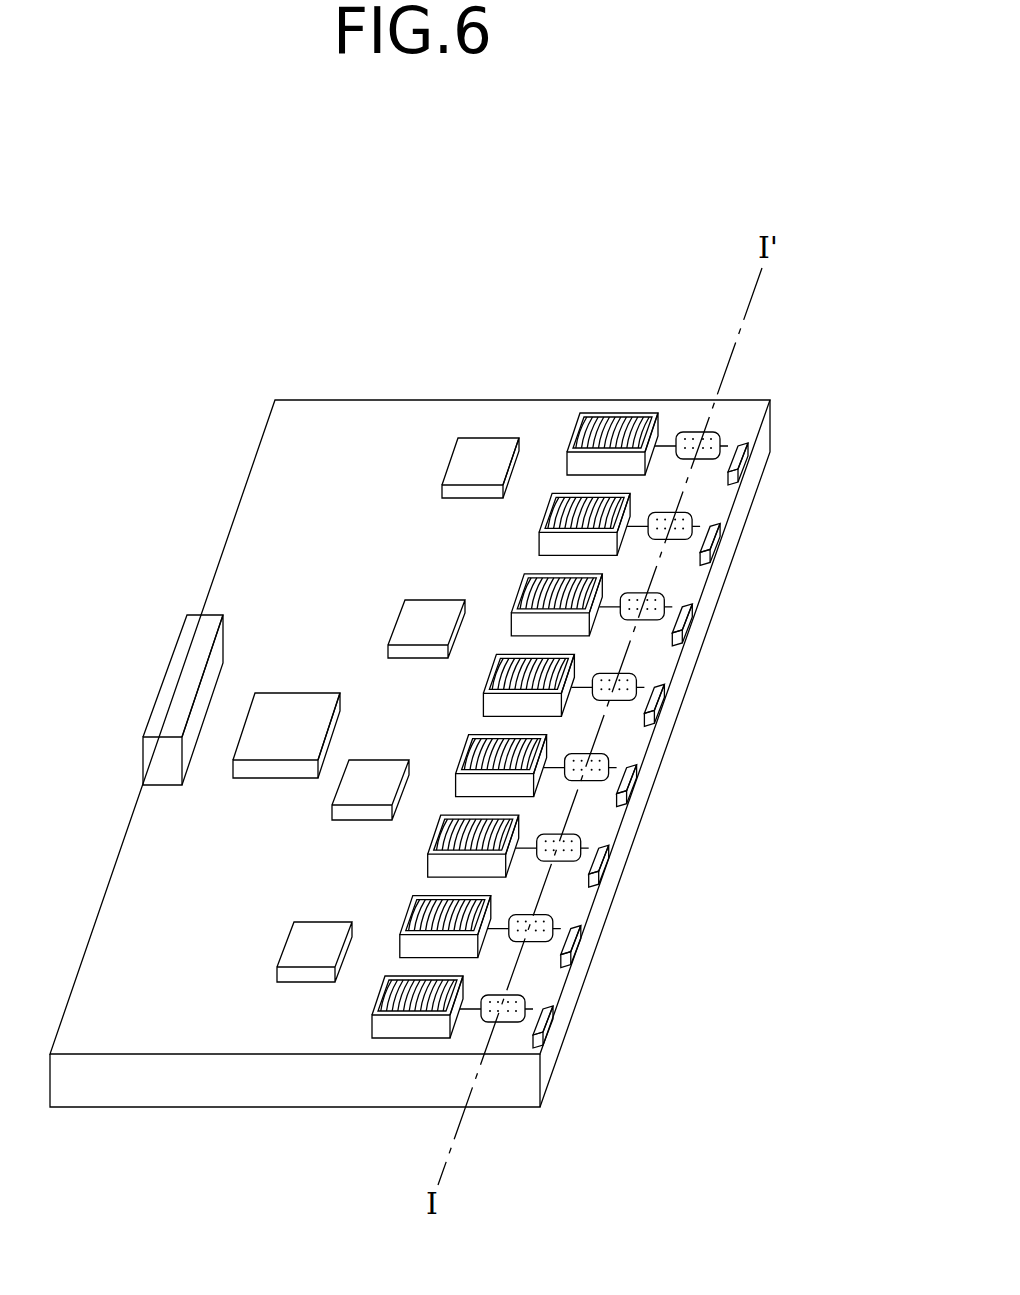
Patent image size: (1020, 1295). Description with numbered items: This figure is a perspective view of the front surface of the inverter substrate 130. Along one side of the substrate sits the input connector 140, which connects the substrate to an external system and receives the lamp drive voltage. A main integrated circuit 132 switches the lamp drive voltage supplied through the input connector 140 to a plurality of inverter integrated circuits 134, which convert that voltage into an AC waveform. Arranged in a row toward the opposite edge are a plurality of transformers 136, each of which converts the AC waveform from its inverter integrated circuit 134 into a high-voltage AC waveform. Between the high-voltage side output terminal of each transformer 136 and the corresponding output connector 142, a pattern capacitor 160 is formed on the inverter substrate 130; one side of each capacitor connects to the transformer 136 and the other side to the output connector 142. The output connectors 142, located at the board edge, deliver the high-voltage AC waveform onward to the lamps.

The inverter substrate 130 is at (344, 410).
The main integrated circuit 132 is at (292, 700).
The inverter integrated circuit 134 is at (460, 468).
The transformer 136 is at (627, 415).
The input connector 140 is at (172, 677).
The output connector 142 is at (742, 467).
The pattern capacitor 160 is at (700, 445).